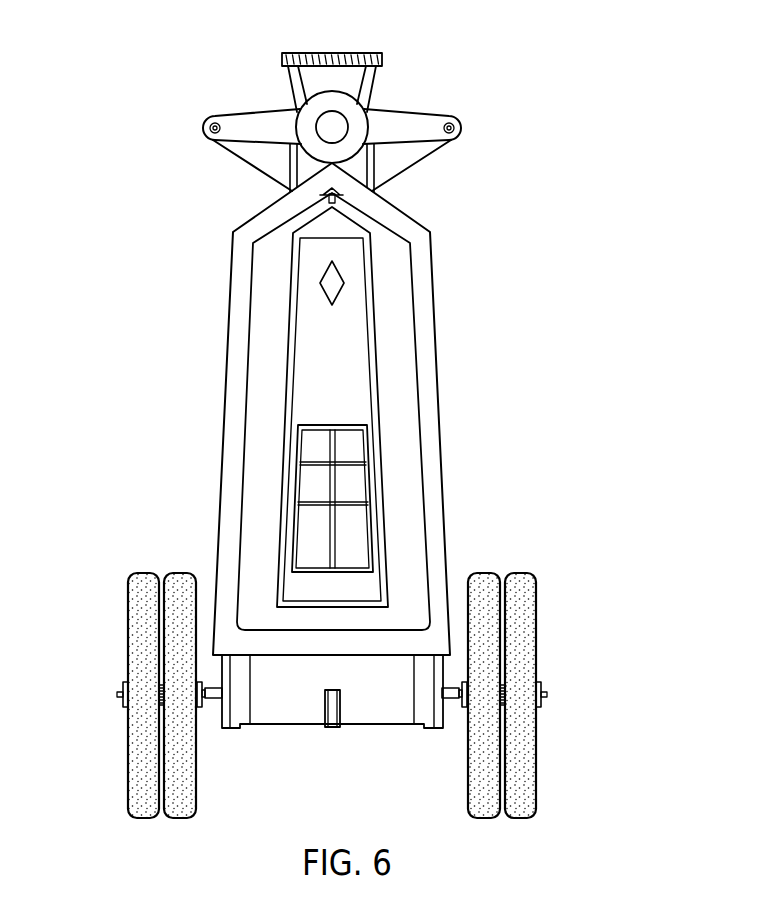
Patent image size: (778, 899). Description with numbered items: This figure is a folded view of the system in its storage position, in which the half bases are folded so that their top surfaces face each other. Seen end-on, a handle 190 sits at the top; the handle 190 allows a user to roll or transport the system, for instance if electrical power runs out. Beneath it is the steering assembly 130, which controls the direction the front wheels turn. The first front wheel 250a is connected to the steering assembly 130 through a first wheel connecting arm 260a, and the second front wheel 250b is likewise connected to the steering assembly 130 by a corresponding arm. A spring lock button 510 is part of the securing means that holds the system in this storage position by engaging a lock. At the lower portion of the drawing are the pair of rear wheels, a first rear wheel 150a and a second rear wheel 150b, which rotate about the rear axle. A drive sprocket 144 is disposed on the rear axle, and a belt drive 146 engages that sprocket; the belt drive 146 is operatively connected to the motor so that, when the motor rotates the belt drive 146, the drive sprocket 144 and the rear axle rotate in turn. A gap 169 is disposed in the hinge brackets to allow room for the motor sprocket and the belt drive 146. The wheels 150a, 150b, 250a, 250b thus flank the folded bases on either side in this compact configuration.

The handle 190 is at (326, 52).
The first wheel connecting arm 260a is at (238, 117).
The spring lock button 510 is at (342, 194).
The steering assembly 130 is at (345, 382).
The first rear wheel 150a is at (183, 577).
The second rear wheel 150b is at (482, 583).
The first front wheel 250a is at (145, 577).
The second front wheel 250b is at (527, 580).
The drive sprocket 144 is at (340, 703).
The belt drive 146 is at (335, 728).
The gap 169 is at (342, 728).